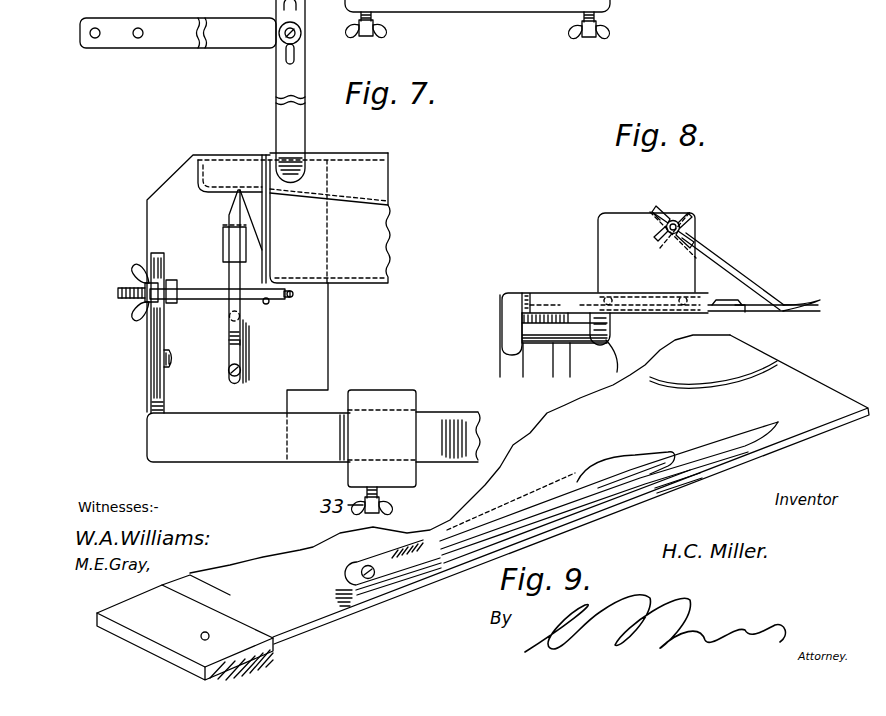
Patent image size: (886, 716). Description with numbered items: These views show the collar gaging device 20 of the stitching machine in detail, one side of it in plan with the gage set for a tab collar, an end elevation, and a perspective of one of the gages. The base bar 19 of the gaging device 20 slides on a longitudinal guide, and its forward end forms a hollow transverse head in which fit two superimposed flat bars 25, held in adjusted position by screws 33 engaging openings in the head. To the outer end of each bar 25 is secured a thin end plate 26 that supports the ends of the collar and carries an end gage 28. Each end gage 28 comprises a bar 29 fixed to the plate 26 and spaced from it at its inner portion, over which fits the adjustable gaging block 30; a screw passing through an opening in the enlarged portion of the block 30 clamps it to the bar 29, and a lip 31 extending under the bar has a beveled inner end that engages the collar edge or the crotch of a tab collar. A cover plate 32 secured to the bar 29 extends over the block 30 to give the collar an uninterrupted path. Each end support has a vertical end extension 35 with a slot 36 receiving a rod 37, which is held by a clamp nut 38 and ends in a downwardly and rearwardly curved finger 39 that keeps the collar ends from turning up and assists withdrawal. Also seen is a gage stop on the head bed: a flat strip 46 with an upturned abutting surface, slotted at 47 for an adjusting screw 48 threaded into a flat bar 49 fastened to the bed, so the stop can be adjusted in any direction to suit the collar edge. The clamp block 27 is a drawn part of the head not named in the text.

In FIG. 8, the base bar 19 is at (613, 362).
In FIG. 8, the gaging device 20 is at (615, 291).
In FIG. 7, the superimposed flat bars 25 is at (248, 437).
In FIG. 8, the superimposed flat bars 25 is at (530, 322).
In FIG. 9, the superimposed flat bars 25 is at (250, 636).
In FIG. 9, the end plate 26 is at (515, 489).
In FIG. 7, the clamp block 27 is at (414, 438).
In FIG. 8, the clamp block 27 is at (508, 296).
In FIG. 7, the end gage 28 is at (221, 280).
In FIG. 8, the end gage 28 is at (775, 299).
In FIG. 9, the end gage 28 is at (561, 491).
In FIG. 7, the bar 29 is at (228, 215).
In FIG. 8, the bar 29 is at (790, 303).
In FIG. 9, the bar 29 is at (588, 496).
In FIG. 7, the adjustable gaging block 30 is at (223, 245).
In FIG. 8, the adjustable gaging block 30 is at (745, 300).
In FIG. 9, the adjustable gaging block 30 is at (640, 468).
In FIG. 7, the lip 31 is at (245, 235).
In FIG. 7, the cover plate 32 is at (229, 312).
In FIG. 9, the cover plate 32 is at (511, 506).
In FIG. 7, the screws 33 is at (376, 36).
In FIG. 7, the vertical end extension 35 is at (163, 317).
In FIG. 8, the vertical end extension 35 is at (646, 252).
In FIG. 8, the slot 36 is at (656, 230).
In FIG. 7, the rod 37 is at (210, 293).
In FIG. 8, the rod 37 is at (680, 218).
In FIG. 9, the rod 37 is at (668, 486).
In FIG. 7, the clamp nut 38 is at (135, 283).
In FIG. 8, the clamp nut 38 is at (682, 226).
In FIG. 7, the curved finger 39 is at (261, 155).
In FIG. 8, the curved finger 39 is at (738, 280).
In FIG. 7, the flat strip 46 is at (298, 80).
In FIG. 7, the slot 47 is at (288, 50).
In FIG. 7, the adjusting screw 48 is at (279, 43).
In FIG. 7, the flat bar 49 is at (218, 42).